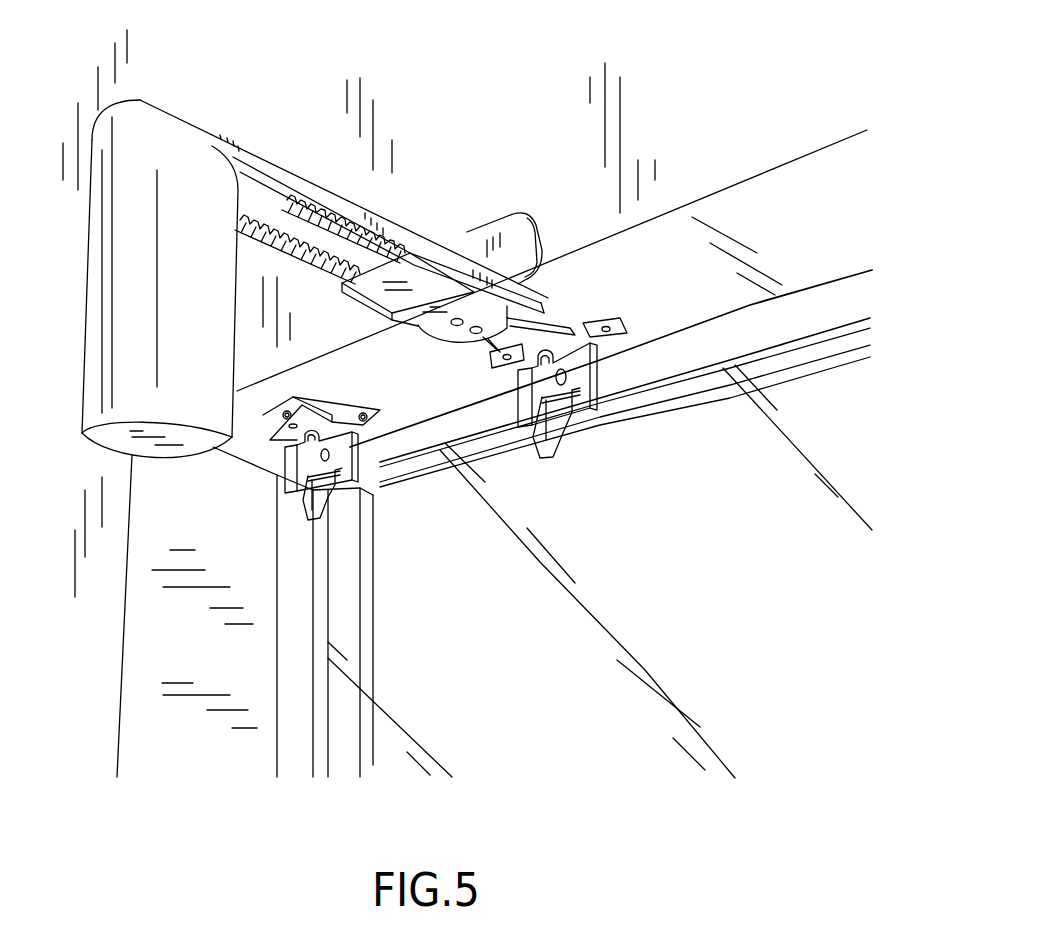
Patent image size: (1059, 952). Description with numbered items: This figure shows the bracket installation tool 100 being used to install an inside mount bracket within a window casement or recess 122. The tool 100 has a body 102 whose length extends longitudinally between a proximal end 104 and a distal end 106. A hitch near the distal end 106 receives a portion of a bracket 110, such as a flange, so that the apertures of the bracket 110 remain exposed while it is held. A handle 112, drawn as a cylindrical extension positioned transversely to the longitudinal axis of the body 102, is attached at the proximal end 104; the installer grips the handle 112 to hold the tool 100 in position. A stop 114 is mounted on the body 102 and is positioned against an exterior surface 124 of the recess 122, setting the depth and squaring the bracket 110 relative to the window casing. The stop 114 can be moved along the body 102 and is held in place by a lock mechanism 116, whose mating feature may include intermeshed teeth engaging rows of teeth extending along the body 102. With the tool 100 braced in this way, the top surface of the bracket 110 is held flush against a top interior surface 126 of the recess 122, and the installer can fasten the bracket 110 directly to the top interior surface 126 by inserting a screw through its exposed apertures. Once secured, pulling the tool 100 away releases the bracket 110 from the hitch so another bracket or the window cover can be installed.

The bracket installation tool 100 is at (352, 135).
The body 102 is at (185, 108).
The proximal end 104 is at (235, 108).
The distal end 106 is at (447, 240).
The bracket 110 is at (593, 330).
The handle 112 is at (128, 202).
The stop 114 is at (508, 230).
The lock mechanism 116 is at (325, 262).
The window casement or recess 122 is at (200, 690).
The exterior surface 124 is at (660, 207).
The top interior surface 126 is at (777, 207).